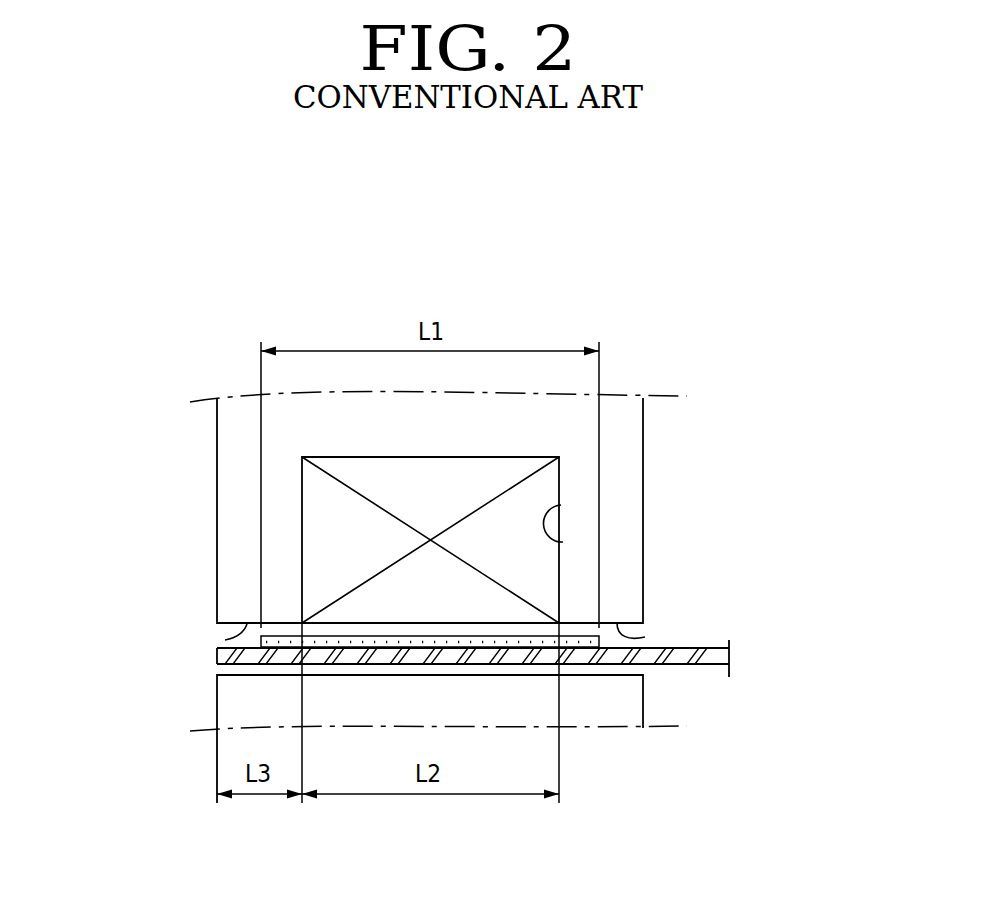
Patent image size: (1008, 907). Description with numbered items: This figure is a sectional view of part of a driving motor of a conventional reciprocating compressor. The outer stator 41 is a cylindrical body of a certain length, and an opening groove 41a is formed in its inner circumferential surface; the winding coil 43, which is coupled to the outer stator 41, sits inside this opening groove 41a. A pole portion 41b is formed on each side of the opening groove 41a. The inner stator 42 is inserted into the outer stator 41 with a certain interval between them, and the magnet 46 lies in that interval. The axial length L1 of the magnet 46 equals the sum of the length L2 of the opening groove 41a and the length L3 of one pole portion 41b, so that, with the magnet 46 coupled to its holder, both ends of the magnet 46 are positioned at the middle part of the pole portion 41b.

The outer stator 41 is at (205, 475).
The opening groove 41a is at (563, 542).
The pole portion 41b is at (645, 637).
The inner stator 42 is at (660, 697).
The winding coil 43 is at (558, 437).
The magnet 46 is at (272, 626).